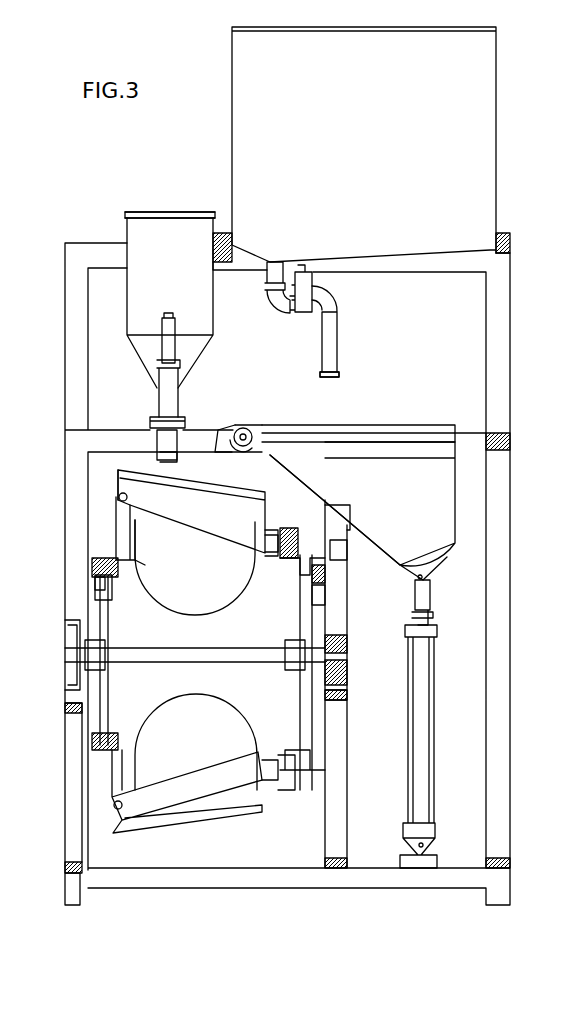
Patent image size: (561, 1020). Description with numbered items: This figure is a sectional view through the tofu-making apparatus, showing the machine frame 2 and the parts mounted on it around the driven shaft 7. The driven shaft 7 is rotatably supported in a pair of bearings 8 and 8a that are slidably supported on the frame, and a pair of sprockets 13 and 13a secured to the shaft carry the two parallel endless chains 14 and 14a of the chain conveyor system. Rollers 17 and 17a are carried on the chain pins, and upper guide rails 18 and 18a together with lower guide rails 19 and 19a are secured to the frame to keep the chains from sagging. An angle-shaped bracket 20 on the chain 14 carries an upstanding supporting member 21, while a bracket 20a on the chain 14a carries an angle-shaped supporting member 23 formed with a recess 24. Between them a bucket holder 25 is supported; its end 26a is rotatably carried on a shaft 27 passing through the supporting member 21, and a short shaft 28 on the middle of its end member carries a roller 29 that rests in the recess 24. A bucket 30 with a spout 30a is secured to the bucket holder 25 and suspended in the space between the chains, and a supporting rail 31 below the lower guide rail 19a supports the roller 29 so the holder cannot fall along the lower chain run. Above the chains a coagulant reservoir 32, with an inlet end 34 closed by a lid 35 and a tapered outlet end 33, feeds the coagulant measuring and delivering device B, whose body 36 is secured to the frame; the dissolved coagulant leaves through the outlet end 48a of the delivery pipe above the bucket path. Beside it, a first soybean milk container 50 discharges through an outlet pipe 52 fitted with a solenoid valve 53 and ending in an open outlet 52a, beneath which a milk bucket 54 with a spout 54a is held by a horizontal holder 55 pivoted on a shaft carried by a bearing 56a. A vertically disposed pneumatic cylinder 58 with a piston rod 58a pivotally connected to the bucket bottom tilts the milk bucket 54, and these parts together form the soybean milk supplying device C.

The machine frame 2 is at (508, 595).
The first soybean milk container 50 is at (497, 140).
The coagulant reservoir 32 is at (130, 222).
The inlet end 34 is at (199, 207).
The lid 35 is at (163, 212).
The outlet end 33 is at (160, 400).
The body 36 is at (185, 422).
The spout 30a is at (160, 445).
The coagulant measuring and delivering device B is at (205, 398).
The solenoid valve 53 is at (315, 286).
The outlet pipe 52 is at (330, 335).
The open outlet 52a is at (336, 375).
The milk bucket 54 is at (420, 430).
The spout 54a is at (245, 425).
The holder 55 is at (425, 458).
The bearing 56a is at (255, 430).
The soybean milk supplying device C is at (481, 501).
The roller 29 is at (315, 497).
The bucket 30 is at (176, 608).
The bucket holder 25 is at (206, 545).
The end of bucket holder 26a is at (118, 470).
The shaft 27 is at (118, 497).
The supporting member 21 is at (116, 530).
The recess 24 is at (262, 548).
The short shaft 28 is at (270, 530).
The angle-shaped supporting member 23 is at (290, 534).
The angle-shaped bracket 20 is at (136, 560).
The bracket 20a is at (290, 570).
The sprocket 13a is at (300, 615).
The endless chain 14a is at (340, 545).
The roller 17a is at (328, 575).
The upper guide rail 18a is at (326, 596).
The endless chain 14 is at (92, 566).
The roller 17 is at (96, 582).
The upper guide rail 18 is at (106, 595).
The sprocket 13 is at (106, 621).
The driven shaft 7 is at (220, 655).
The bearing 8 is at (70, 652).
The bearing 8a is at (350, 648).
The supporting rail 31 is at (265, 800).
The lower guide rail 19 is at (105, 775).
The lower guide rail 19a is at (330, 766).
The piston rod 58a is at (433, 600).
The pneumatic cylinder 58 is at (434, 722).
The outlet end 48a is at (172, 462).